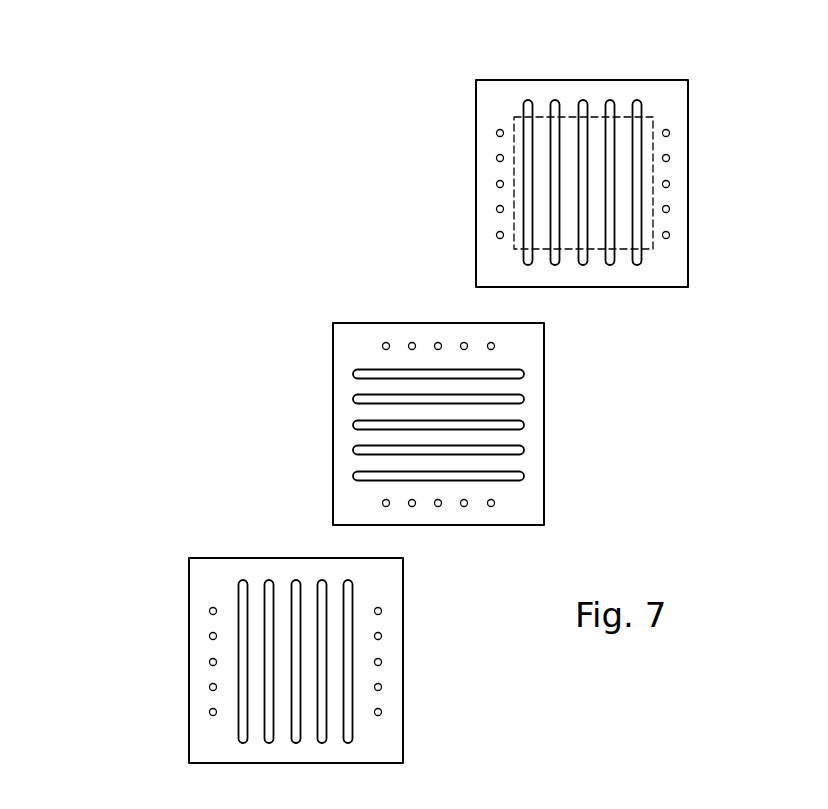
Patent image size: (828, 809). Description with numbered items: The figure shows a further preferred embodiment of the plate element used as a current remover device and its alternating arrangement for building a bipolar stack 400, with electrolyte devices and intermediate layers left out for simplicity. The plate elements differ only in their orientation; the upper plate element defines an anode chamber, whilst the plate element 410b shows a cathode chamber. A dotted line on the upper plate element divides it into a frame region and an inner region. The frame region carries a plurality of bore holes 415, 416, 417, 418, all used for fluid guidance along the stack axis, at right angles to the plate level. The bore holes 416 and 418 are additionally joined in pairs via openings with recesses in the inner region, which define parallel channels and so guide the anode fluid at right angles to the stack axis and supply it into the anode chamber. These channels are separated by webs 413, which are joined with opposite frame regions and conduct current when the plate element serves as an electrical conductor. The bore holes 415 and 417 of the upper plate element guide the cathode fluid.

The bipolar stack 400 is at (268, 198).
The plate element 410b is at (304, 353).
The webs 413 is at (540, 132).
The bore holes 415 is at (496, 133).
The bore holes 416 is at (637, 100).
The bore holes 417 is at (670, 133).
The bore holes 418 is at (637, 265).